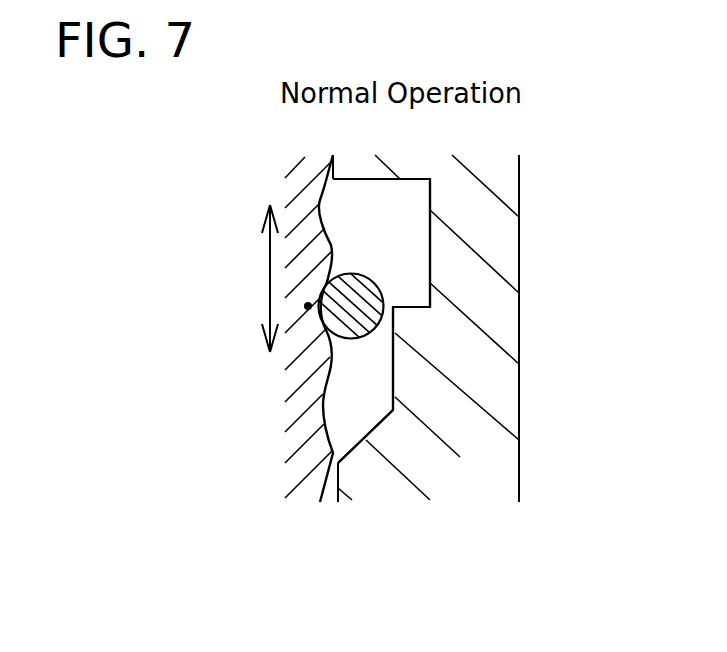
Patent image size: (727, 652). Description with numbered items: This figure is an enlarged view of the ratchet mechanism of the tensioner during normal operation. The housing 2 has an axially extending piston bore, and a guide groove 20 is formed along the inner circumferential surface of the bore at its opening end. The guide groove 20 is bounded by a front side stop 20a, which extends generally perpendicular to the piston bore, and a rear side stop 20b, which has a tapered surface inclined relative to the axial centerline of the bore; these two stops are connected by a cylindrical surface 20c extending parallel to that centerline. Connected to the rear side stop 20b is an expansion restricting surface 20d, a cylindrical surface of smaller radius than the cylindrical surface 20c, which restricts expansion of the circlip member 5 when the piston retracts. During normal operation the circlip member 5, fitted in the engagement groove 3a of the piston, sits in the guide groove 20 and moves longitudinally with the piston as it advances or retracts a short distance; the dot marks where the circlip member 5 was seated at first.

The housing 2 is at (503, 498).
The engagement groove 3a is at (329, 397).
The circlip member 5 is at (399, 293).
The guide groove 20 is at (417, 230).
The front side stop 20a is at (400, 180).
The rear side stop 20b is at (372, 428).
The cylindrical surface 20c is at (427, 253).
The expansion restricting surface 20d is at (394, 370).